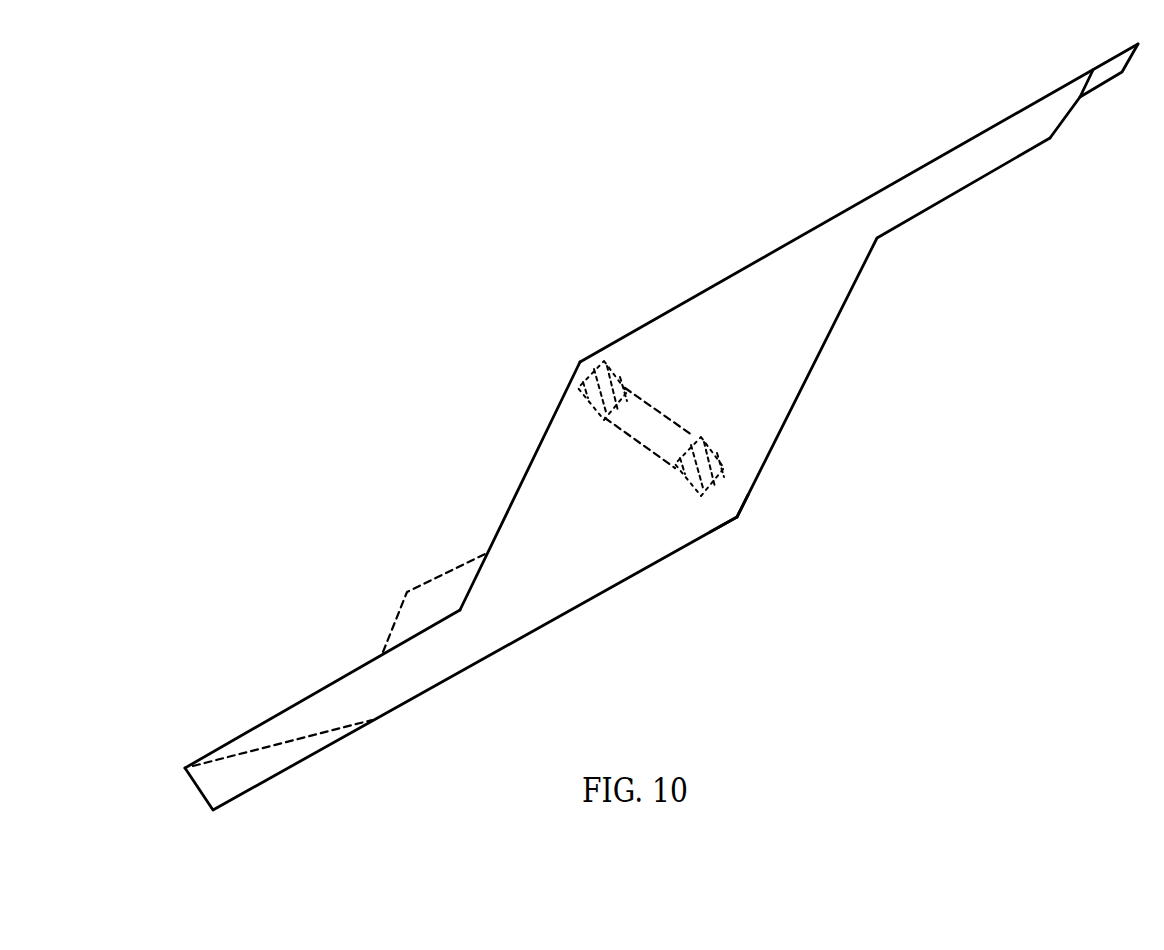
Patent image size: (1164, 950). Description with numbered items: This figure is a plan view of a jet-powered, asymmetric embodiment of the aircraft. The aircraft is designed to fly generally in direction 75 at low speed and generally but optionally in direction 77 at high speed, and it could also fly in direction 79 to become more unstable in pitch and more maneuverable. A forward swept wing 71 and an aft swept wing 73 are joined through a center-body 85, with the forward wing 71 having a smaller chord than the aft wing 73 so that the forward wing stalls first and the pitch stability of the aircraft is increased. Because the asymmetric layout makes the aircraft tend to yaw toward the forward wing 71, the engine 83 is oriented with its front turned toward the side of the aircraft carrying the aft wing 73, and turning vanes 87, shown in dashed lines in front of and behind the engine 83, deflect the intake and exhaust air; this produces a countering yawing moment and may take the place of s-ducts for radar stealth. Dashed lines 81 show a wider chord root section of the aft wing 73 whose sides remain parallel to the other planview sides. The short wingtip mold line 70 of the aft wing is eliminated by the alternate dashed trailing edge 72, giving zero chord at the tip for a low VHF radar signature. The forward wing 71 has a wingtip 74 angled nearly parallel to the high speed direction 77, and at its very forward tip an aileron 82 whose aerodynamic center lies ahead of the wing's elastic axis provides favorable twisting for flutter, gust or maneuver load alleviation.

The short wingtip mold line 70 is at (198, 797).
The forward wing 71 is at (930, 208).
The alternate trailing edge 72 is at (323, 733).
The aft wing 73 is at (322, 690).
The wingtip 74 is at (1063, 118).
The low speed flight direction 75 is at (557, 332).
The high speed flight direction 77 is at (557, 332).
The alternate flight direction 79 is at (557, 332).
The wider chord section 81 is at (447, 573).
The aileron 82 is at (1108, 60).
The engine 83 is at (670, 416).
The center-body 85 is at (613, 513).
The turning vanes 87 is at (683, 477).